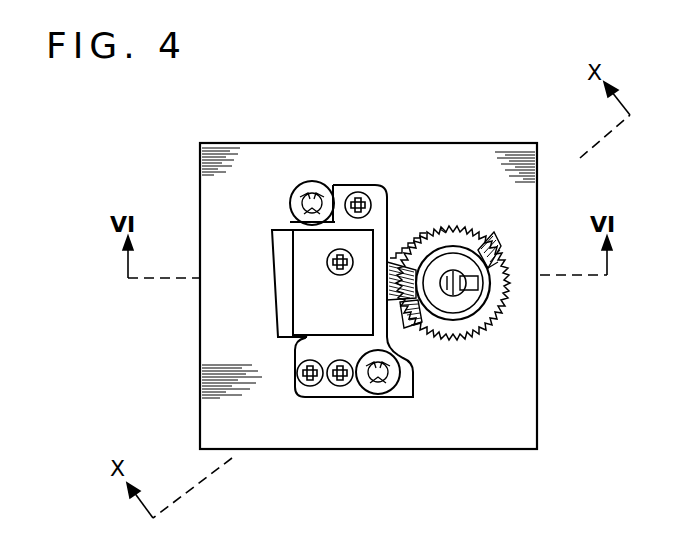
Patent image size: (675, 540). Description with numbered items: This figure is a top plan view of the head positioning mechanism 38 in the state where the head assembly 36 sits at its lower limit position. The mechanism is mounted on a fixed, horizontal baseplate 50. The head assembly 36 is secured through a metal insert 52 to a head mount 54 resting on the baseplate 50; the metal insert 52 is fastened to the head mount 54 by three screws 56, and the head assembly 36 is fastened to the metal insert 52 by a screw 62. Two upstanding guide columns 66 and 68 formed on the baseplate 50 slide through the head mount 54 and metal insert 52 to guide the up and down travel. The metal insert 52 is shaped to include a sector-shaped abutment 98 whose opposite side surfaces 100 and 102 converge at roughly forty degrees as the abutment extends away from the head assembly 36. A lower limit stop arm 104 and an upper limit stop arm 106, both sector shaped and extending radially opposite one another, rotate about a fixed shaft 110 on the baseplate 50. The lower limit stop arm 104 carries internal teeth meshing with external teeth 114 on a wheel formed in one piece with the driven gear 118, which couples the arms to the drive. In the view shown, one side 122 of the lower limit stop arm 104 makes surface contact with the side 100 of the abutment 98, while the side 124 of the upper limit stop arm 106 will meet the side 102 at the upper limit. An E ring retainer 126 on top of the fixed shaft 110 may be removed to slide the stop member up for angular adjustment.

The head assembly 36 is at (282, 300).
The head positioning mechanism 38 is at (222, 123).
The baseplate 50 is at (290, 156).
The metal insert 52 is at (389, 200).
The head mount 54 is at (332, 190).
The screws 56 is at (368, 192).
The screw 62 is at (327, 263).
The guide column 66 is at (385, 378).
The guide column 68 is at (300, 203).
The abutment 98 is at (428, 186).
The side surface 100 is at (390, 307).
The side surface 102 is at (398, 230).
The lower limit stop arm 104 is at (447, 320).
The upper limit stop arm 106 is at (494, 236).
The fixed shaft 110 is at (488, 266).
The external teeth 114 is at (504, 298).
The driven gear 118 is at (493, 317).
The side 122 is at (386, 292).
The side 124 is at (447, 229).
The E ring retainer 126 is at (472, 287).